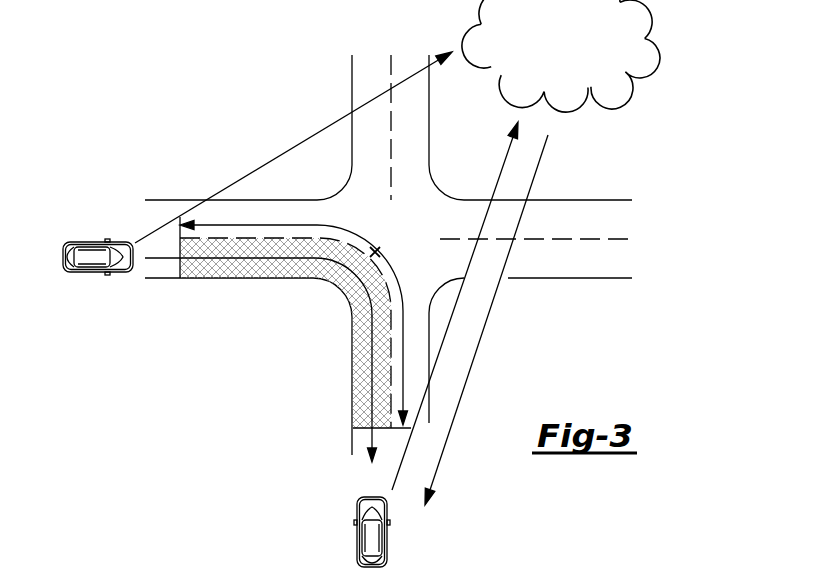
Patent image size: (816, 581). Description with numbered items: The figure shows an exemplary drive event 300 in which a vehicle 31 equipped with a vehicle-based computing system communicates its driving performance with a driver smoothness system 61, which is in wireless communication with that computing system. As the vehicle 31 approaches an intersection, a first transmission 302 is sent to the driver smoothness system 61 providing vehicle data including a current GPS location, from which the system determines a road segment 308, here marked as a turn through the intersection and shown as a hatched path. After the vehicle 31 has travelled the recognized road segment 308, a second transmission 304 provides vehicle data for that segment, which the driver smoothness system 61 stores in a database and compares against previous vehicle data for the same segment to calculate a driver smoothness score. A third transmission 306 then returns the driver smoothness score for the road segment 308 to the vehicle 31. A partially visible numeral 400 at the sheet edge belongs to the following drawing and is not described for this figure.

The drive event 300 is at (171, 43).
The first transmission 302 is at (221, 190).
The second transmission 304 is at (504, 163).
The third transmission 306 is at (535, 177).
The road segment 308 is at (382, 247).
The driver smoothness system 61 is at (661, 42).
The vehicle 31 is at (63, 260).
The driving environment (next figure) 400 is at (100, 580).